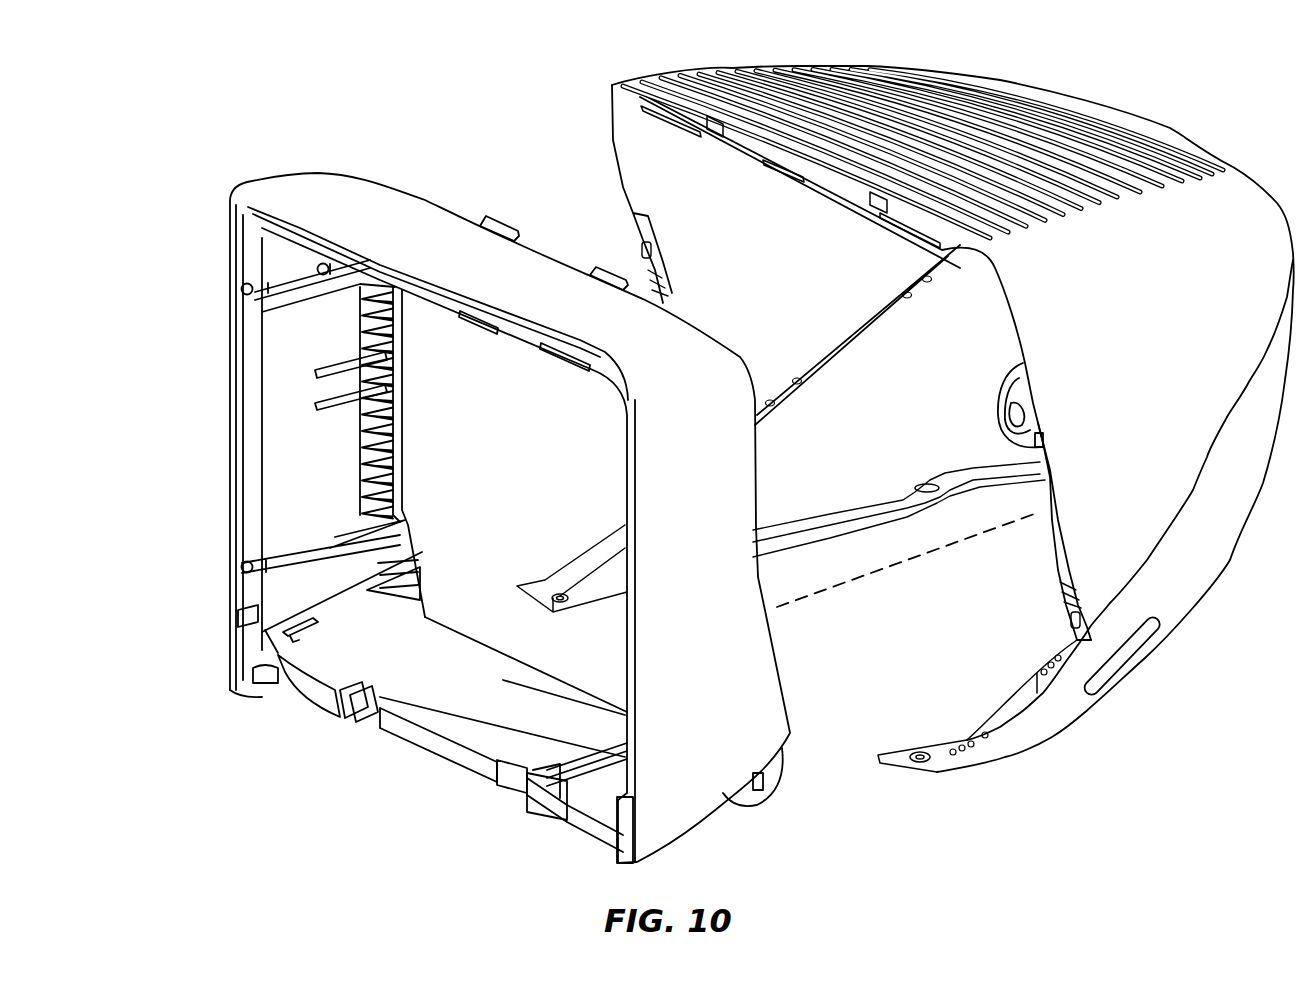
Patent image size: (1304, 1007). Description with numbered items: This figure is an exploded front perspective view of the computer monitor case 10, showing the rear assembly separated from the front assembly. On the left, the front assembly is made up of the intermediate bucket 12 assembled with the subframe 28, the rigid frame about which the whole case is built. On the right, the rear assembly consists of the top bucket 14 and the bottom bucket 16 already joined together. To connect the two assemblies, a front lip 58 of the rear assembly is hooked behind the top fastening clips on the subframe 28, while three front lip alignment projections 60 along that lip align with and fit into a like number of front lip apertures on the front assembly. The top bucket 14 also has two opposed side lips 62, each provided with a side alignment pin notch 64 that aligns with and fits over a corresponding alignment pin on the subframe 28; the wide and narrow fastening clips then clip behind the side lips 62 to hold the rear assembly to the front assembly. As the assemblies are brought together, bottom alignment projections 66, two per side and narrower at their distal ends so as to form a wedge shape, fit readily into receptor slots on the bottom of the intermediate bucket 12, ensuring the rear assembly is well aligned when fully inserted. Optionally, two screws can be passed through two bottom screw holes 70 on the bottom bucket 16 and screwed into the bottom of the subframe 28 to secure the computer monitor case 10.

The computer monitor case 10 is at (410, 775).
The intermediate bucket 12 is at (709, 617).
The top bucket 14 is at (1143, 418).
The bottom bucket 16 is at (1195, 573).
The subframe 28 is at (330, 690).
The front lip 58 is at (822, 184).
The front lip alignment projections 60 is at (693, 130).
The side lips 62 is at (648, 240).
The side alignment pin notch 64 is at (665, 276).
The bottom alignment projections 66 is at (585, 555).
The bottom screw holes 70 is at (568, 603).